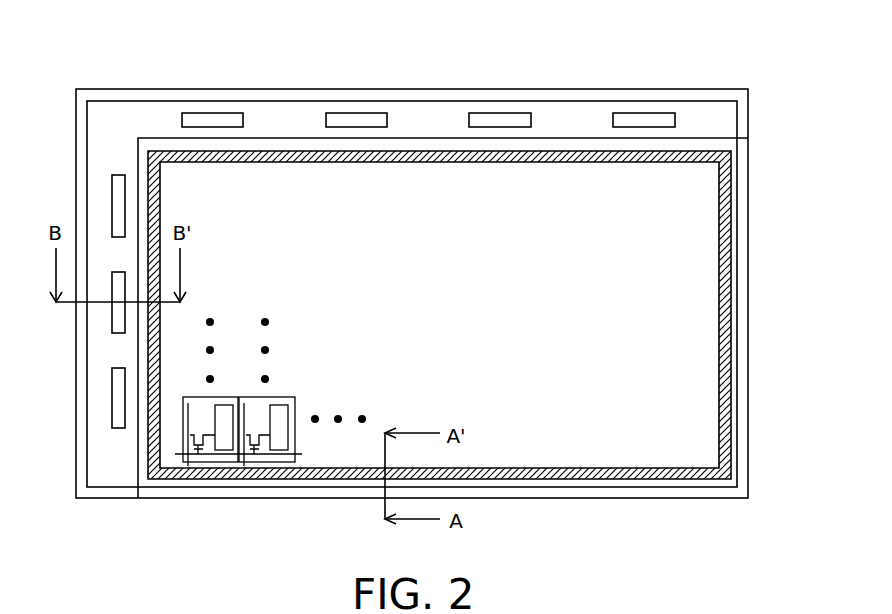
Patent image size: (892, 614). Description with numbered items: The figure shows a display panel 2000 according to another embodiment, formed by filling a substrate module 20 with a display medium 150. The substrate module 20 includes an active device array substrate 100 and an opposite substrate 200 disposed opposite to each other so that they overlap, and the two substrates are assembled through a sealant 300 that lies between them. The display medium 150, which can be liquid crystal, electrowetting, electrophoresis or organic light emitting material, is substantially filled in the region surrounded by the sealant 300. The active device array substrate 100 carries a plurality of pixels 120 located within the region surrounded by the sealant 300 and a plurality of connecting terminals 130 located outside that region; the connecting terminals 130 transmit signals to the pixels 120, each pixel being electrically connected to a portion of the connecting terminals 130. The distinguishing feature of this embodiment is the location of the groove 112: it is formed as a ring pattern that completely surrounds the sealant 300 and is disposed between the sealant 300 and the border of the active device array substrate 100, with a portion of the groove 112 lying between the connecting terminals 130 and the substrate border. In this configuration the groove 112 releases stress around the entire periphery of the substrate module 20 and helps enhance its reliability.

The substrate module 20 is at (748, 33).
The active device array substrate 100 is at (738, 89).
The groove 112 is at (550, 487).
The pixels 120 is at (212, 462).
The connecting terminals 130 is at (358, 120).
The display medium 150 is at (693, 195).
The opposite substrate 200 is at (691, 138).
The sealant 300 is at (598, 151).
The display panel 2000 is at (708, 567).